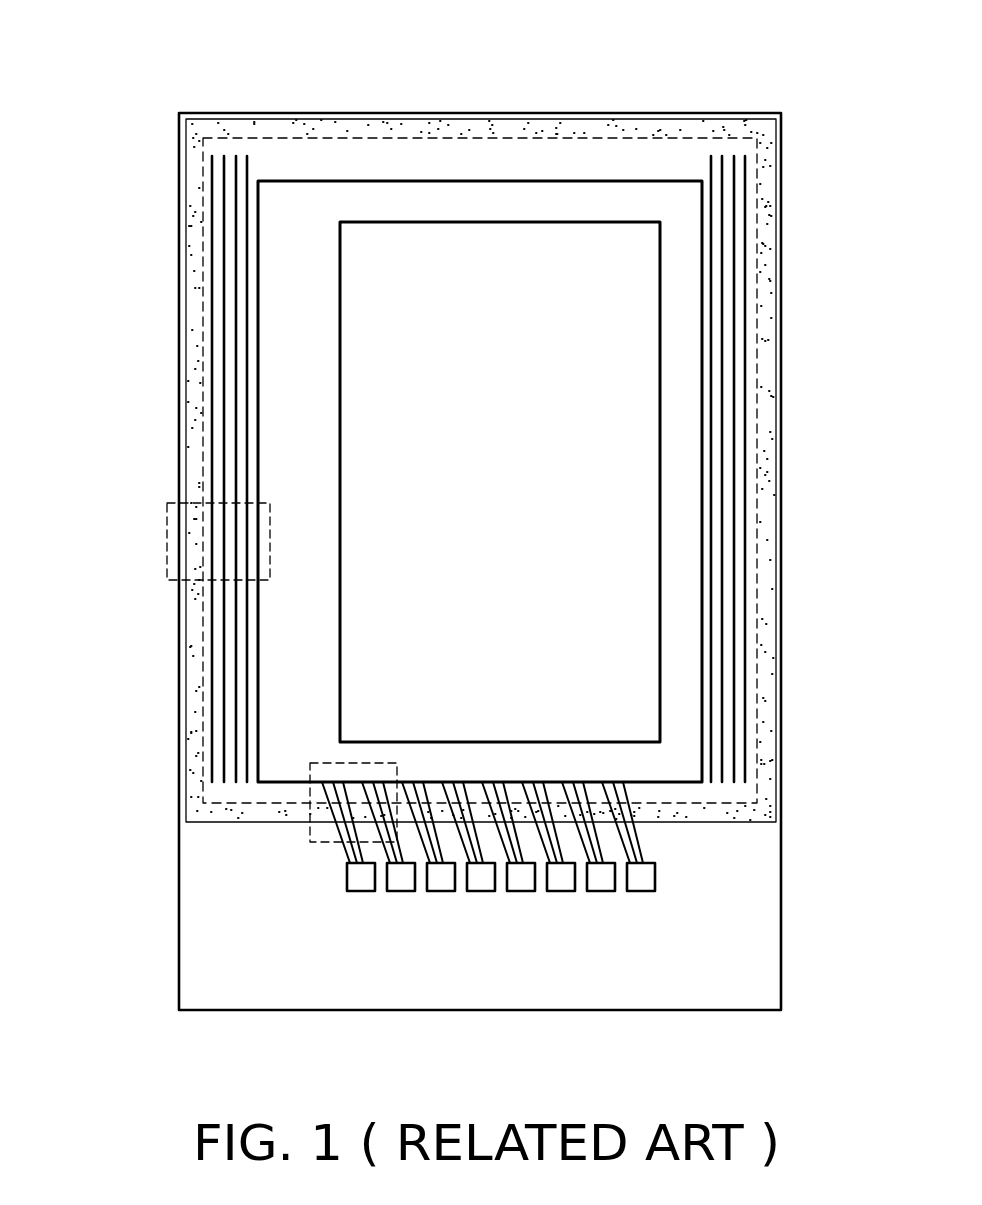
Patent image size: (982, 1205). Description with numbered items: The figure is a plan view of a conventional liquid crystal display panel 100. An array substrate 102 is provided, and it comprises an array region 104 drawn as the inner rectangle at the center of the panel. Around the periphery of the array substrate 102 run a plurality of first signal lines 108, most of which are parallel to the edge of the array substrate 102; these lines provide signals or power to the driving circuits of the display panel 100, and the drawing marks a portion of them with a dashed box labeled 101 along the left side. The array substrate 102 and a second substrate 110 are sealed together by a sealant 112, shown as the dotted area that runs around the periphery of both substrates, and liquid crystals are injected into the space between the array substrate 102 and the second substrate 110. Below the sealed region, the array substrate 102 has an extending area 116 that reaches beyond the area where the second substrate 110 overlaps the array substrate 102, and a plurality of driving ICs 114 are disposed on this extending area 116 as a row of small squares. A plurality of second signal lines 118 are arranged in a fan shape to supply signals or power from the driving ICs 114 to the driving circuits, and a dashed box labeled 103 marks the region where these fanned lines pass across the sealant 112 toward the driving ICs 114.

The display panel 100 is at (163, 133).
The region of conductive lines 101 is at (167, 540).
The array substrate 102 is at (745, 846).
The connection region 103 is at (310, 790).
The array region 104 is at (500, 222).
The first signal lines 108 is at (213, 553).
The second substrate 110 is at (702, 828).
The sealant 112 is at (723, 803).
The driving ICs 114 is at (360, 880).
The extending area 116 is at (747, 963).
The second signal lines 118 is at (388, 832).